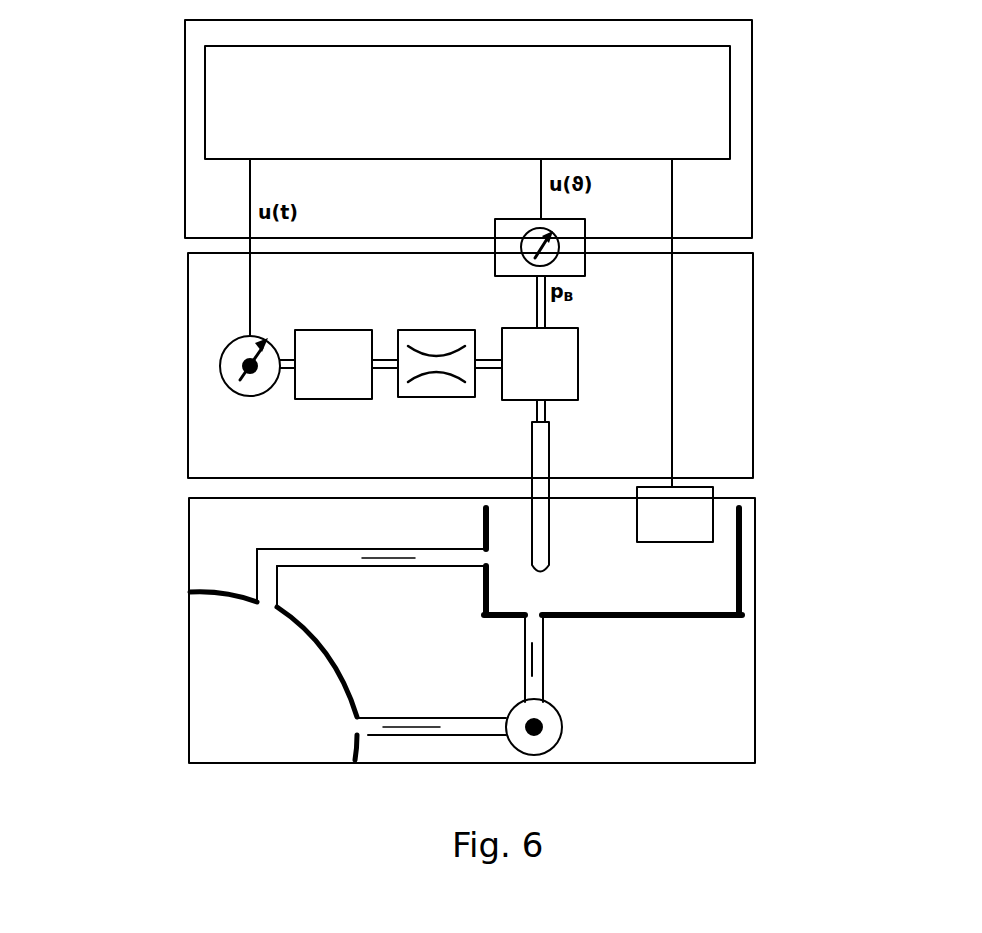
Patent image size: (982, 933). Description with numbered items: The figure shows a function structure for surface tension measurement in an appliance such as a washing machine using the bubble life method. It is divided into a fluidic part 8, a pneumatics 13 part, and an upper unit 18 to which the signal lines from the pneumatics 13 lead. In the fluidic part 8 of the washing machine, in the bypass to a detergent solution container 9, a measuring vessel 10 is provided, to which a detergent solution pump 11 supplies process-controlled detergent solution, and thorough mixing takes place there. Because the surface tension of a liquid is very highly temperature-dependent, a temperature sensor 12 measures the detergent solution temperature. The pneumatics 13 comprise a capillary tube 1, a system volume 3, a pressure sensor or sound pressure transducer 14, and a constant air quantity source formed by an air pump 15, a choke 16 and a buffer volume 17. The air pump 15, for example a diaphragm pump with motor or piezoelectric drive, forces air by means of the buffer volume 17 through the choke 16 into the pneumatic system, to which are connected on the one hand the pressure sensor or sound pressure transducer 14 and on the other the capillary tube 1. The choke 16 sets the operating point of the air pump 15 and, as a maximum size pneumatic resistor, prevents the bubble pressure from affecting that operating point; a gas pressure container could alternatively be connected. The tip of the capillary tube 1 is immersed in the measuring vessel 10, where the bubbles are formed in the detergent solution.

The capillary tube 1 is at (549, 459).
The system volume 3 is at (578, 361).
The fluidic part 8 is at (201, 531).
The detergent solution container 9 is at (232, 651).
The measuring vessel 10 is at (743, 566).
The detergent solution pump 11 is at (553, 730).
The temperature sensor 12 is at (707, 503).
The pneumatics 13 is at (198, 267).
The pressure sensor or sound pressure transducer 14 is at (585, 232).
The air pump 15 is at (217, 368).
The choke 16 is at (420, 330).
The buffer volume 17 is at (296, 400).
The evaluation unit 18 is at (230, 107).